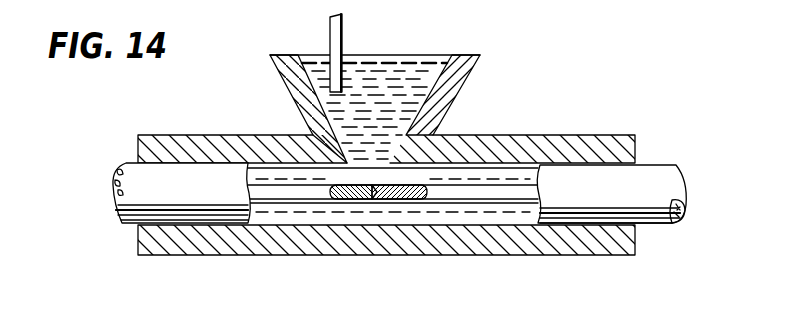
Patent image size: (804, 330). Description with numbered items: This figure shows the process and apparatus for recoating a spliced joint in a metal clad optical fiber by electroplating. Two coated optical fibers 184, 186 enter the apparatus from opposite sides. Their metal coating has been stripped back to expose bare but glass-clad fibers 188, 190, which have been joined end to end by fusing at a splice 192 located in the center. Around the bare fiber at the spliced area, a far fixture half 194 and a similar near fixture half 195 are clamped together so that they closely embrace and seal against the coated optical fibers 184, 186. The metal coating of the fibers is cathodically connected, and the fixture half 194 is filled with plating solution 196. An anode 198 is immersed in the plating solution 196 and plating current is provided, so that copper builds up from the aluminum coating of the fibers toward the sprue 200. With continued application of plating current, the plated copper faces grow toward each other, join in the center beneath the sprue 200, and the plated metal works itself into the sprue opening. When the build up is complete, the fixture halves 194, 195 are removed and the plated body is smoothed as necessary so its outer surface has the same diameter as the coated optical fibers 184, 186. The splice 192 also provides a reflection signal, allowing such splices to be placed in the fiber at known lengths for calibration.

The coated optical fiber 184 is at (147, 200).
The coated optical fiber 186 is at (642, 205).
The bare glass-clad fiber 188 is at (347, 197).
The bare glass-clad fiber 190 is at (473, 190).
The splice 192 is at (382, 187).
The far fixture half 194 is at (540, 133).
The near fixture half 195 is at (562, 257).
The plating solution 196 is at (395, 78).
The anode 198 is at (333, 42).
The sprue 200 is at (443, 97).